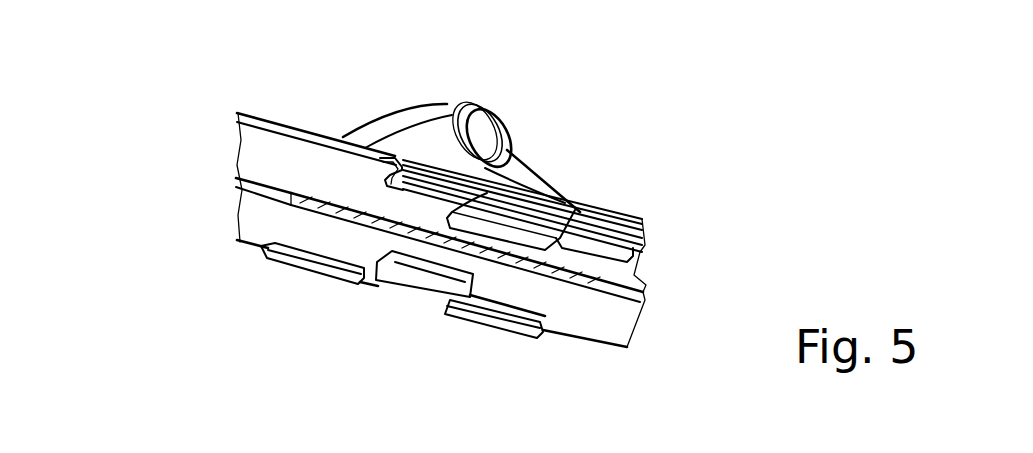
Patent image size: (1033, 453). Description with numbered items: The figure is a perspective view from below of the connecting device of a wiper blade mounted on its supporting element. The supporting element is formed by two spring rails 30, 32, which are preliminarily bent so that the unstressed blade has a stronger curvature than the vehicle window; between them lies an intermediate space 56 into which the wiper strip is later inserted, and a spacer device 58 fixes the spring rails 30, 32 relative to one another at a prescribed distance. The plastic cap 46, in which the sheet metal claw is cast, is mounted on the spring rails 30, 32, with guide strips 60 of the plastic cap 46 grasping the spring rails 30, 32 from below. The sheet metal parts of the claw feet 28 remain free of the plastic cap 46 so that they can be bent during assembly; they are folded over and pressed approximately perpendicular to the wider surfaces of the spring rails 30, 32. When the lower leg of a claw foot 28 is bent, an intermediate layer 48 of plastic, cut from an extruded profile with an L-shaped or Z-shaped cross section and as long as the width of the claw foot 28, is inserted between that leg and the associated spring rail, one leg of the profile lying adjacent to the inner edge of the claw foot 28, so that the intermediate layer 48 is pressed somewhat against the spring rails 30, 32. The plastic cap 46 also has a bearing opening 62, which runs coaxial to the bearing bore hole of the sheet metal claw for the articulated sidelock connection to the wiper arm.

The claw feet 28 is at (645, 227).
The spring rail 30 is at (255, 152).
The spring rail 32 is at (255, 225).
The plastic cap 46 is at (443, 118).
The intermediate layer 48 is at (367, 288).
The intermediate space 56 is at (240, 183).
The spacer device 58 is at (281, 207).
The guide strips 60 is at (347, 143).
The bearing opening 62 is at (490, 135).